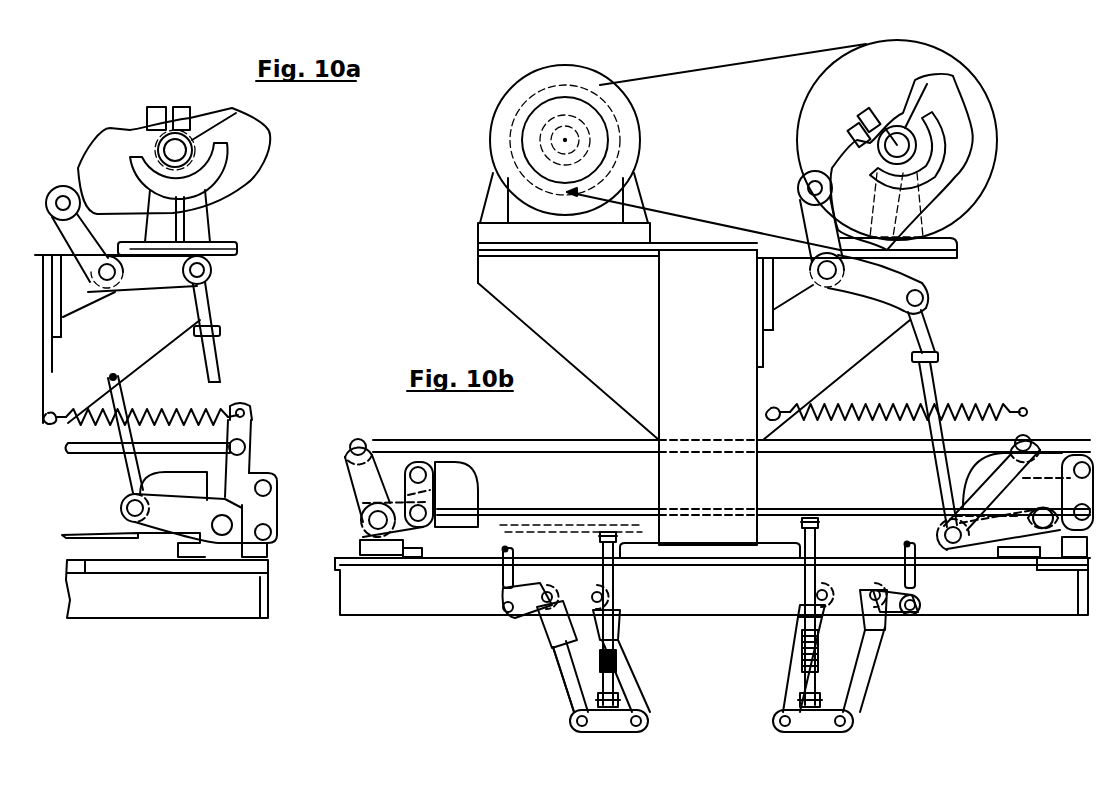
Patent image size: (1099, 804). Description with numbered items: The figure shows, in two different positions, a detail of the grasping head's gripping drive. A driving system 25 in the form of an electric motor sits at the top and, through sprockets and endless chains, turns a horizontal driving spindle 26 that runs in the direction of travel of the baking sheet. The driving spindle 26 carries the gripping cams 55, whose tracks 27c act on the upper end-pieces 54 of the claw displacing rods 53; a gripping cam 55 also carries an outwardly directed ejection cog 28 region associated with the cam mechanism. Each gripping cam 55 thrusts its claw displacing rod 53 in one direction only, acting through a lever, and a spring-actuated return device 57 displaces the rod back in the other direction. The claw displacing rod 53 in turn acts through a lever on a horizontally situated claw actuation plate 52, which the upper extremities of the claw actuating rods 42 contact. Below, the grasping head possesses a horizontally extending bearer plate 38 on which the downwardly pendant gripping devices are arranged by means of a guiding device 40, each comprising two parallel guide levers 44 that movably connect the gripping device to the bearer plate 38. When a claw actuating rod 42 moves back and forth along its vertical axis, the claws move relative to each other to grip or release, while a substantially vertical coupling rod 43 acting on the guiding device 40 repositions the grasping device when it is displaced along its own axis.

In FIG. 10B, the driving system 25 is at (580, 78).
In FIG. 10B, the driving spindle 26 is at (830, 150).
In FIG. 10A, the track 27c is at (212, 120).
In FIG. 10B, the track 27c is at (972, 83).
In FIG. 10A, the ejection cog 28 is at (183, 150).
In FIG. 10A, the bearer plate 38 is at (128, 565).
In FIG. 10B, the bearer plate 38 is at (445, 560).
In FIG. 10B, the guiding device 40 is at (533, 628).
In FIG. 10B, the claw actuating rod 42 is at (608, 641).
In FIG. 10B, the coupling rod 43 is at (505, 577).
In FIG. 10B, the guide lever 44 is at (567, 668).
In FIG. 10A, the claw actuation plate 52 is at (100, 532).
In FIG. 10B, the claw actuation plate 52 is at (535, 513).
In FIG. 10A, the claw displacing rod 53 is at (206, 308).
In FIG. 10B, the claw displacing rod 53 is at (932, 386).
In FIG. 10A, the upper end-piece 54 is at (215, 270).
In FIG. 10B, the upper end-piece 54 is at (933, 282).
In FIG. 10A, the gripping cam 55 is at (257, 160).
In FIG. 10B, the gripping cam 55 is at (967, 108).
In FIG. 10A, the spring-actuated return device 57 is at (175, 404).
In FIG. 10B, the spring-actuated return device 57 is at (891, 403).